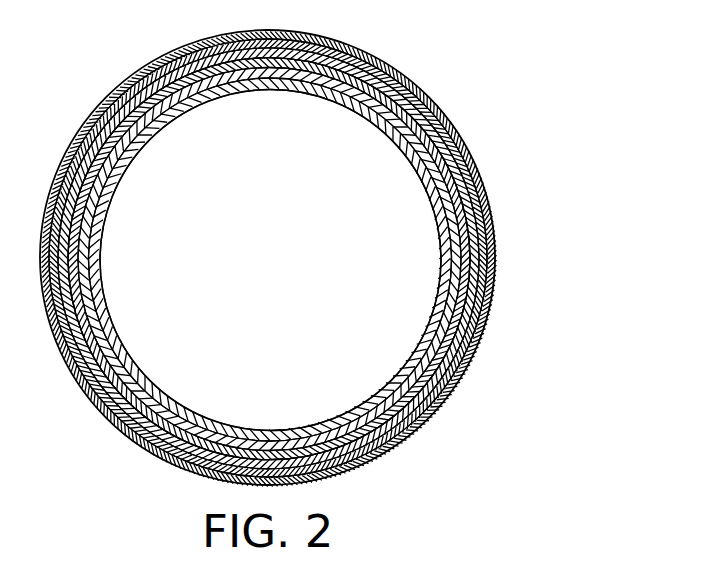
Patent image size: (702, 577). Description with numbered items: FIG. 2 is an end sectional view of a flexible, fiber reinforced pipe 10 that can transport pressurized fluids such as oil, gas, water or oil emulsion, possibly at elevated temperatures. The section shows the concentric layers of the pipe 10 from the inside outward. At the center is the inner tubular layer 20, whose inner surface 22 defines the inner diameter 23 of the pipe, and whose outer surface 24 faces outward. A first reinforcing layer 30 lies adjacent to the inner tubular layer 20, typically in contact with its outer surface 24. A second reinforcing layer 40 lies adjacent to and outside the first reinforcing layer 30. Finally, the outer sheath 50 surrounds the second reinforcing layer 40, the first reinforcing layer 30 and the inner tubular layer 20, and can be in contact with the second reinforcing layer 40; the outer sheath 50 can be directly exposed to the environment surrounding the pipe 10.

The pipe 10 is at (301, 248).
The inner tubular layer 20 is at (436, 187).
The inner surface 22 is at (441, 250).
The inner diameter 23 is at (352, 78).
The outer surface 24 is at (434, 148).
The first reinforcing layer 30 is at (458, 312).
The second reinforcing layer 40 is at (454, 350).
The outer sheath 50 is at (443, 395).